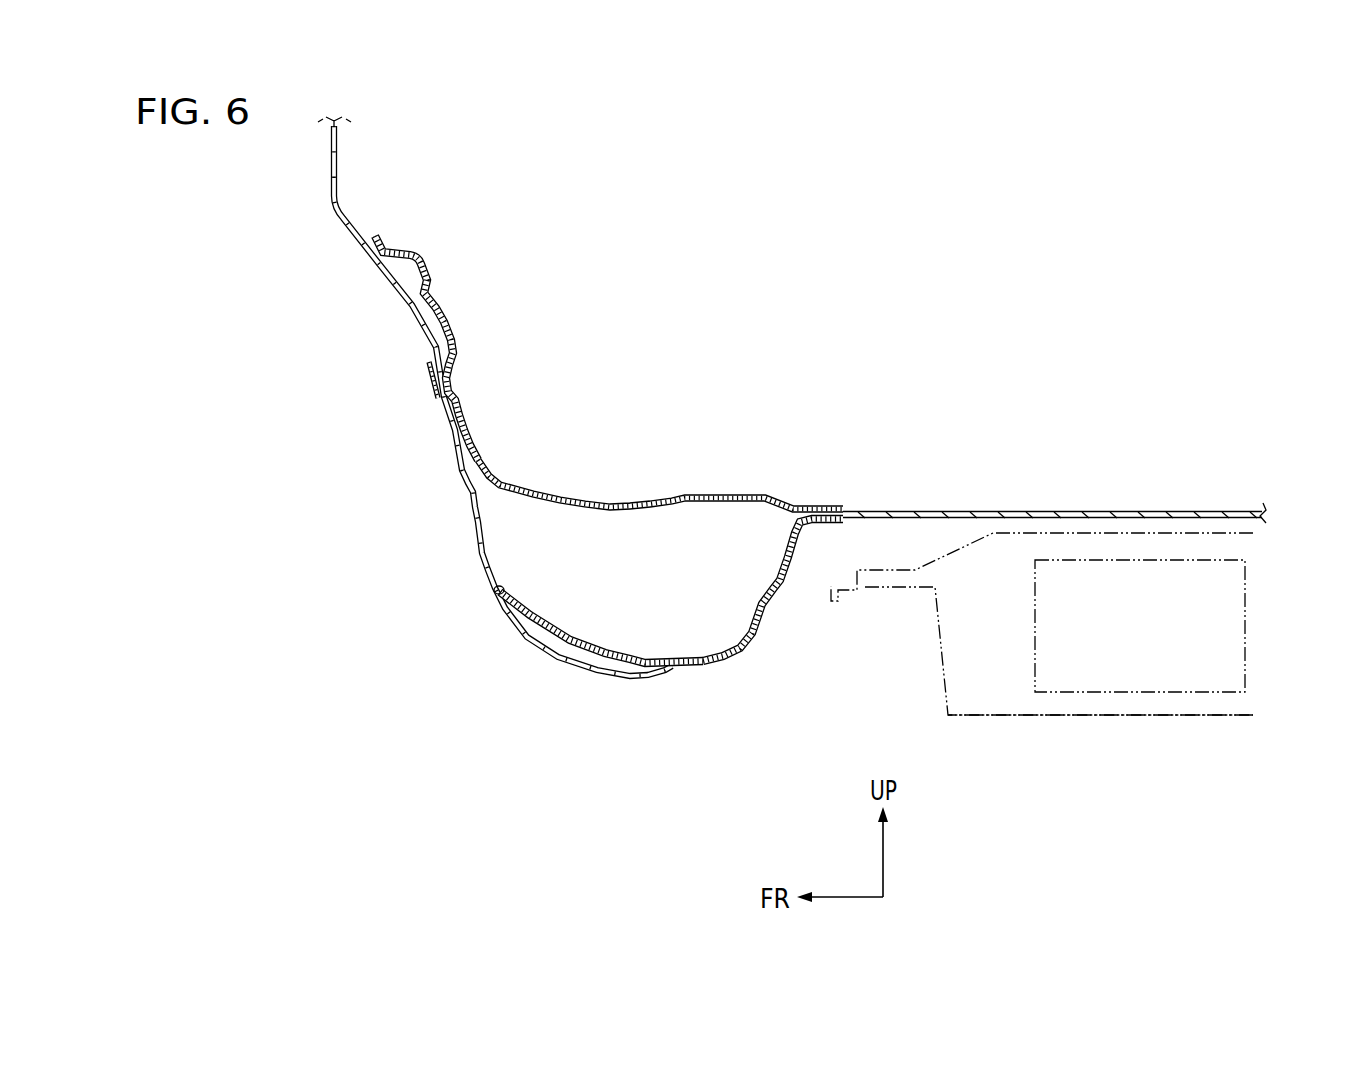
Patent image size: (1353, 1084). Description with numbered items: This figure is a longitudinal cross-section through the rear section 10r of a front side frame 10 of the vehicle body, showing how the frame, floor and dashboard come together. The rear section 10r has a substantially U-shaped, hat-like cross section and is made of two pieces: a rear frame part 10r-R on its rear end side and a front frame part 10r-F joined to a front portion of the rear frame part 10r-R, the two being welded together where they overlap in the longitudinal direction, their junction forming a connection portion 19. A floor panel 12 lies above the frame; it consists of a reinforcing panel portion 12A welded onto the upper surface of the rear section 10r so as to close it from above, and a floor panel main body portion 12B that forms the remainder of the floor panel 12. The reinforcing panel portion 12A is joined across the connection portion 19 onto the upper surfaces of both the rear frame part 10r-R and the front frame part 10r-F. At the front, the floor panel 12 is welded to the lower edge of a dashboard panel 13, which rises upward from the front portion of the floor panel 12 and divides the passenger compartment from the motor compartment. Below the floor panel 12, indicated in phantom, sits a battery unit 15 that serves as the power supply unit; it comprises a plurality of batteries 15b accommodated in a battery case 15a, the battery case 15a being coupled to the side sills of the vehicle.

The front side frame 10 is at (1142, 345).
The rear section 10r is at (485, 603).
The front frame part 10r-F is at (478, 549).
The rear frame part 10r-R is at (719, 663).
The floor panel 12 is at (1054, 463).
The reinforcing panel portion 12A is at (713, 496).
The floor panel main body portion 12B is at (947, 507).
The dashboard panel 13 is at (338, 158).
The battery unit 15 is at (1042, 682).
The battery case 15a is at (1023, 718).
The battery 15b is at (1179, 694).
The connection portion 19 is at (502, 585).